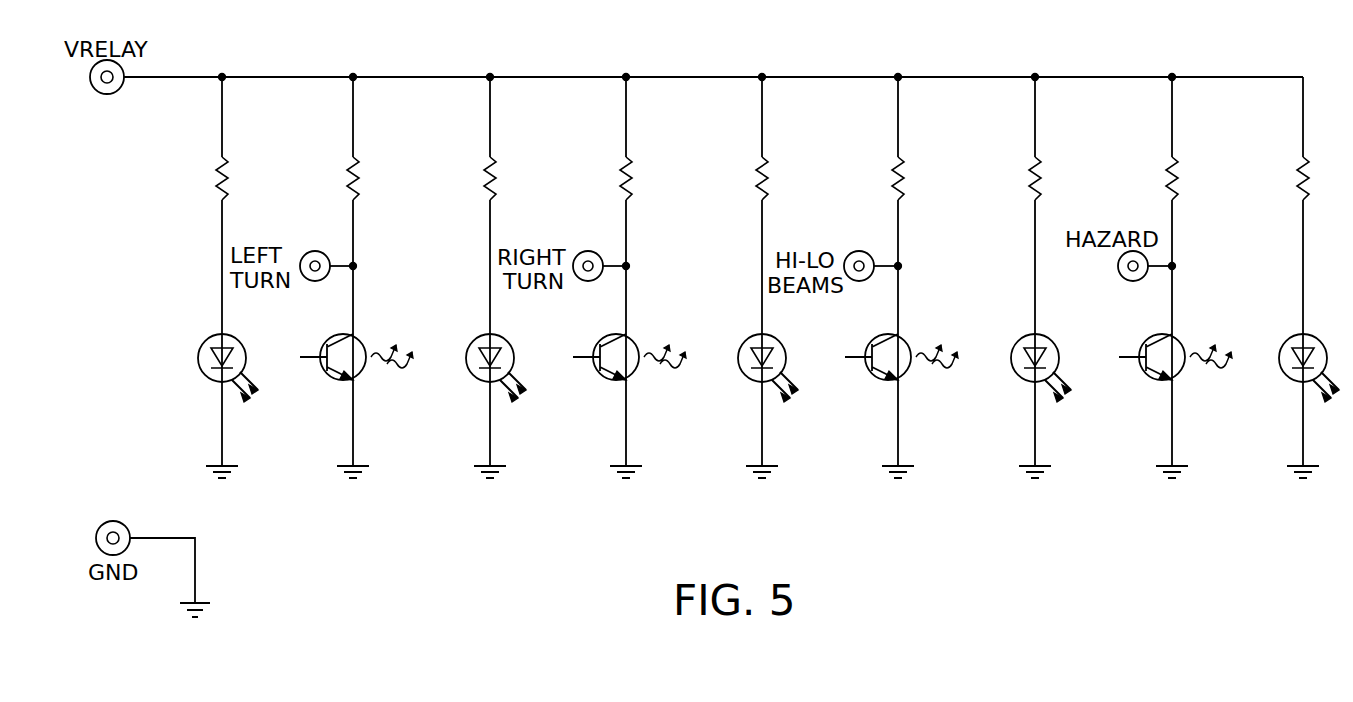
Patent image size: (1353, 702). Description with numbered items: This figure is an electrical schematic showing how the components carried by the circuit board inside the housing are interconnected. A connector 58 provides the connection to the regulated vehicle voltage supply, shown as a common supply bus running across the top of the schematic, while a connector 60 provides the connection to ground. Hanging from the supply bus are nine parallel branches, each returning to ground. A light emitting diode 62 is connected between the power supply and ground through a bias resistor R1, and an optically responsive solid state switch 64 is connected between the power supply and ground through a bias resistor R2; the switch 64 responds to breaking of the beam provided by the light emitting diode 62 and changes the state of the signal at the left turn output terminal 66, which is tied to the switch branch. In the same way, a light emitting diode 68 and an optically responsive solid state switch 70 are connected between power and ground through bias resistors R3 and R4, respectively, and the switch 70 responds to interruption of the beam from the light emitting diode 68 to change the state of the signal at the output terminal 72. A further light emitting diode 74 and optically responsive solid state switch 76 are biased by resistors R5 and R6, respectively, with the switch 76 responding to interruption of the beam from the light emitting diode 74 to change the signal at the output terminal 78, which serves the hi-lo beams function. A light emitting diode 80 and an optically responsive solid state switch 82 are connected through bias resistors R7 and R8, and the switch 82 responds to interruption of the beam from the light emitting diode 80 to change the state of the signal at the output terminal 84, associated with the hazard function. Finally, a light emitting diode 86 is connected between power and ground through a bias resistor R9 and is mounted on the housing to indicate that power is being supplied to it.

The connector 58 is at (107, 95).
The connector 60 is at (113, 520).
The light emitting diode 62 is at (200, 342).
The optically responsive solid state switch 64 is at (358, 335).
The left turn output terminal 66 is at (313, 250).
The light emitting diode 68 is at (504, 336).
The optically responsive solid state switch 70 is at (630, 338).
The output terminal 72 is at (588, 251).
The light emitting diode 74 is at (776, 336).
The optically responsive solid state switch 76 is at (899, 337).
The output terminal 78 is at (860, 251).
The light emitting diode 80 is at (1048, 334).
The optically responsive solid state switch 82 is at (1177, 338).
The output terminal 84 is at (1128, 282).
The light emitting diode 86 is at (1282, 373).
The bias resistor R1 is at (226, 163).
The bias resistor R2 is at (357, 163).
The bias resistor R3 is at (494, 163).
The bias resistor R4 is at (630, 163).
The bias resistor R5 is at (766, 163).
The bias resistor R6 is at (902, 163).
The bias resistor R7 is at (1039, 163).
The bias resistor R8 is at (1176, 165).
The bias resistor R9 is at (1300, 186).